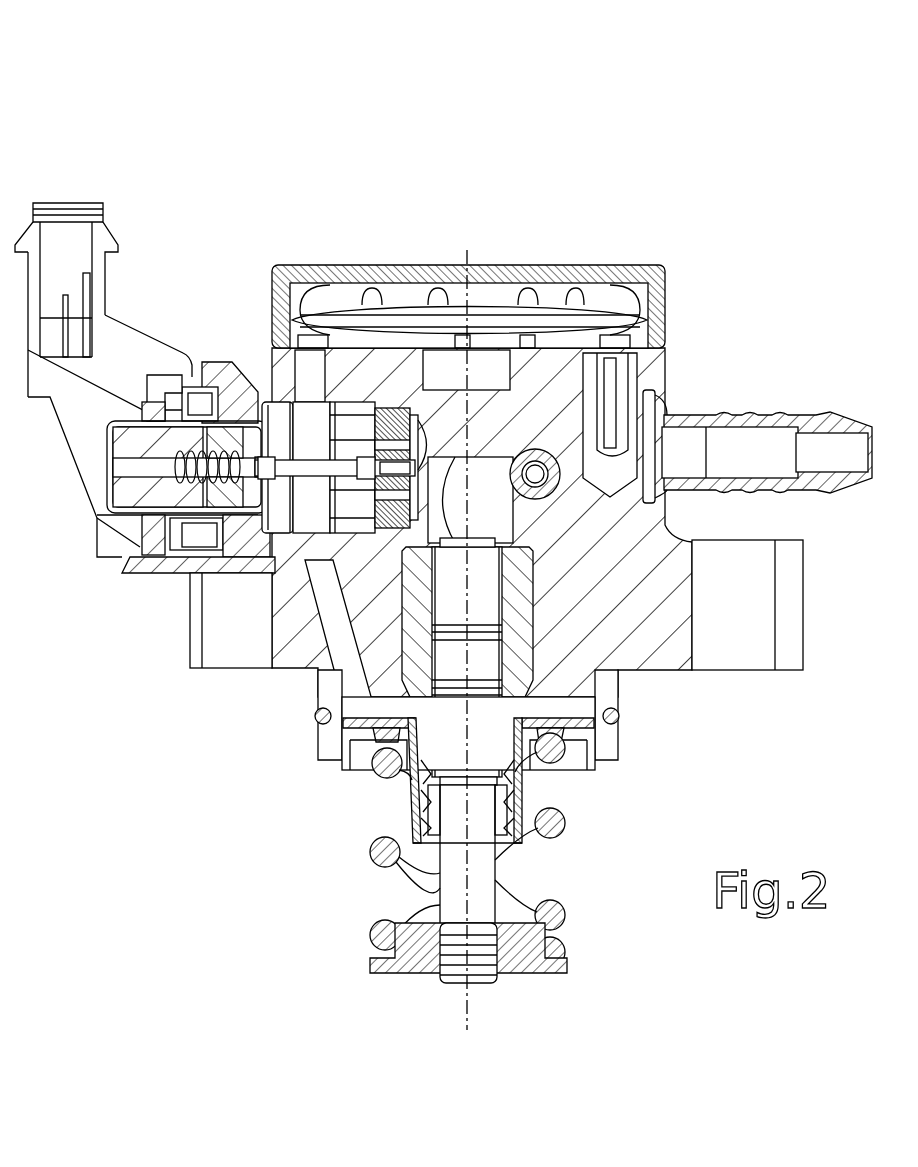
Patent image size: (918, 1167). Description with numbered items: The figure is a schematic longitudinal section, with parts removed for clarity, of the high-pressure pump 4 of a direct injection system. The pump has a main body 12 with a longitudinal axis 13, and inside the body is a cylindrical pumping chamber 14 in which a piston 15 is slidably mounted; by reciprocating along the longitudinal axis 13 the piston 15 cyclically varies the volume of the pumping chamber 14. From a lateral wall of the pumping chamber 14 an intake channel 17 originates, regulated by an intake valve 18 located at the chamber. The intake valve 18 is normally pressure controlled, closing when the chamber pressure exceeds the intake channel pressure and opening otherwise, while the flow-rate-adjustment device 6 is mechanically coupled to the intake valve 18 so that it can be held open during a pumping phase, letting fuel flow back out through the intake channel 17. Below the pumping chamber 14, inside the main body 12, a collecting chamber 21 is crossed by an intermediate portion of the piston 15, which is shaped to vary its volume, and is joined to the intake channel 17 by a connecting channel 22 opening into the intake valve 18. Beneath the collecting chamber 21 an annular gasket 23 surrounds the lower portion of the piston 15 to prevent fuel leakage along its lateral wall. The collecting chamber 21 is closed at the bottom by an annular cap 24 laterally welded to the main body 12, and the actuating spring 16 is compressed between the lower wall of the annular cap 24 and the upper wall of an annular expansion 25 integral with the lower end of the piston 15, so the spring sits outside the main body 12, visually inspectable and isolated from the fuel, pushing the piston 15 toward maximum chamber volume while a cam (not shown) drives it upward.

The high-pressure pump 4 is at (128, 132).
The flow-rate-adjustment device 6 is at (189, 338).
The main body 12 is at (668, 638).
The longitudinal axis 13 is at (466, 1017).
The pumping chamber 14 is at (481, 478).
The piston 15 is at (478, 668).
The actuating spring 16 is at (562, 914).
The intake channel 17 is at (314, 416).
The intake valve 18 is at (422, 440).
The collecting chamber 21 is at (366, 710).
The connecting channel 22 is at (334, 618).
The gasket 23 is at (433, 803).
The annular cap 24 is at (588, 751).
The annular expansion 25 is at (398, 950).